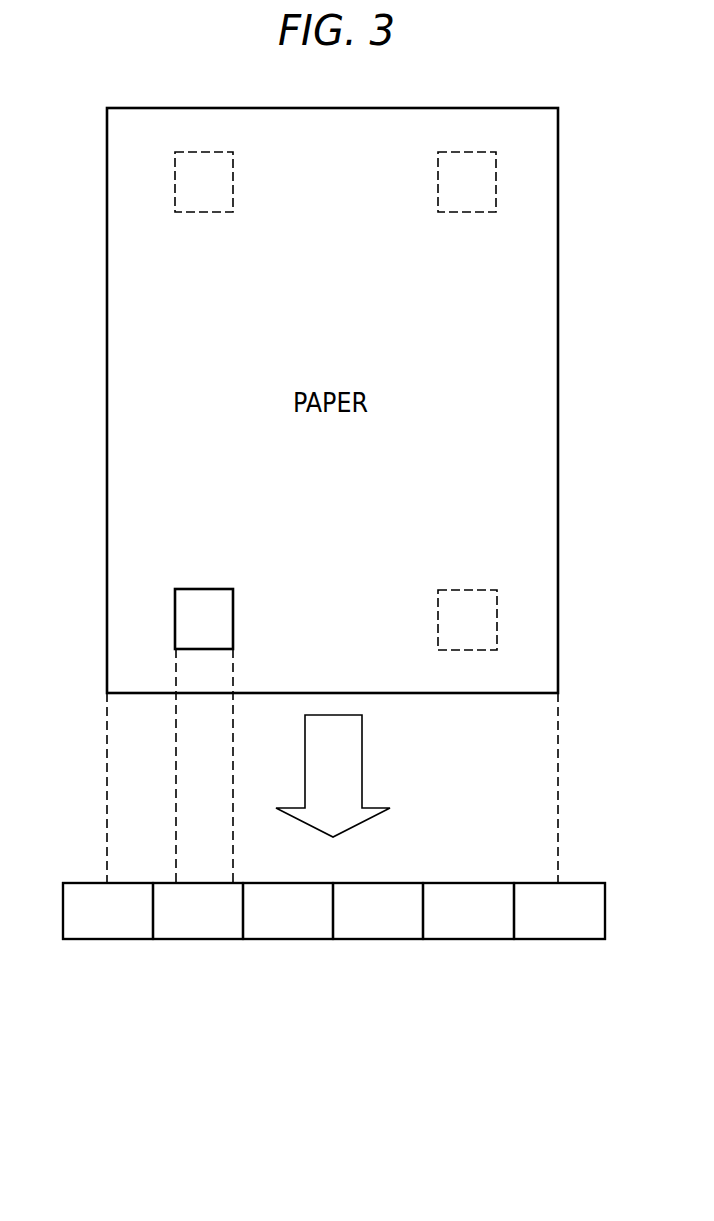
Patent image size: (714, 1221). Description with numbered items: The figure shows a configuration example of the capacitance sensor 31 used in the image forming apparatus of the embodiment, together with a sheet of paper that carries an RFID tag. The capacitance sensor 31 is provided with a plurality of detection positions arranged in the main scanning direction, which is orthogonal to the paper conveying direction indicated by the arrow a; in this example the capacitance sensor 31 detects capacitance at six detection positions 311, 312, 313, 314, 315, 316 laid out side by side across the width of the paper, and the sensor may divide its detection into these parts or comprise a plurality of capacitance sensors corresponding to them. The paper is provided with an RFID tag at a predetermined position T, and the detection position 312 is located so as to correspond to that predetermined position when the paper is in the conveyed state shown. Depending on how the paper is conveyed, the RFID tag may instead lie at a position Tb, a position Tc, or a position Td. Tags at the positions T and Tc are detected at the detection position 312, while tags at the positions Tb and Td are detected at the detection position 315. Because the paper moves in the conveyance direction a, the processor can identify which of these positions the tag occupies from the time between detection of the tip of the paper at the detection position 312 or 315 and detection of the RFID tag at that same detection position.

The position Tc is at (233, 176).
The position Td is at (438, 176).
The predetermined position T is at (233, 604).
The position Tb is at (438, 607).
The conveyance direction a is at (333, 776).
The capacitance sensor 31 is at (332, 972).
The detection position 311 is at (110, 930).
The detection position 312 is at (200, 930).
The detection position 313 is at (290, 930).
The detection position 314 is at (380, 930).
The detection position 315 is at (470, 930).
The detection position 316 is at (559, 938).